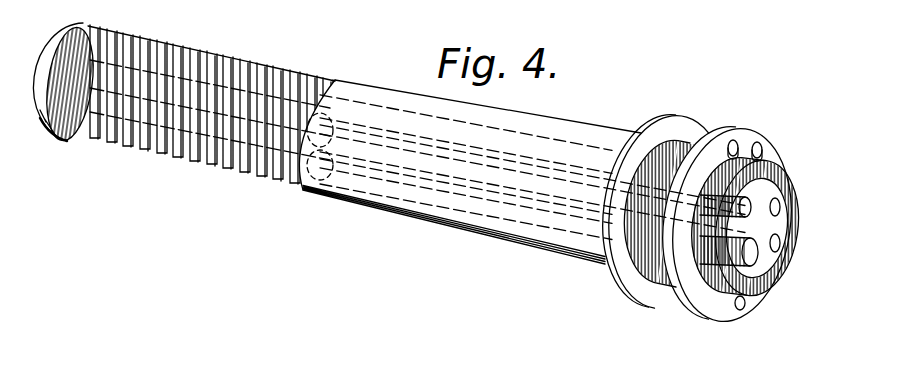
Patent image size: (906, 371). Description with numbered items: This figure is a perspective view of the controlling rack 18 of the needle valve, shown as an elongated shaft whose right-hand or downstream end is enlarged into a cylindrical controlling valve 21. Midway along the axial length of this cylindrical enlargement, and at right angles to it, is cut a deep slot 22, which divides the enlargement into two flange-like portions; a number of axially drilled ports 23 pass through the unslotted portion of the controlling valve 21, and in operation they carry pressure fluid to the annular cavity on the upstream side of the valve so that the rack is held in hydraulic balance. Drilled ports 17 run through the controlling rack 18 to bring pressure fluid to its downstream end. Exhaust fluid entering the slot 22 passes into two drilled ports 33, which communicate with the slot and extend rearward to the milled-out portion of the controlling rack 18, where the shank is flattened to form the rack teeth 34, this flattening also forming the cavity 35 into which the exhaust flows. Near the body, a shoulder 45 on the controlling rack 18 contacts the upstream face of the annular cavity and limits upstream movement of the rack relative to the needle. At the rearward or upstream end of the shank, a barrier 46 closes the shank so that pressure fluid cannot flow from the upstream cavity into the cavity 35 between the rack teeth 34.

The barrier 46 is at (70, 13).
The controlling rack 18 is at (260, 34).
The rack teeth 34 is at (178, 152).
The cavity 35 is at (250, 174).
The drilled ports 33 is at (302, 184).
The shoulder 45 is at (597, 252).
The slot 22 is at (650, 307).
The controlling valve 21 is at (703, 118).
The axially drilled ports 23 is at (735, 147).
The drilled ports 17 is at (781, 212).